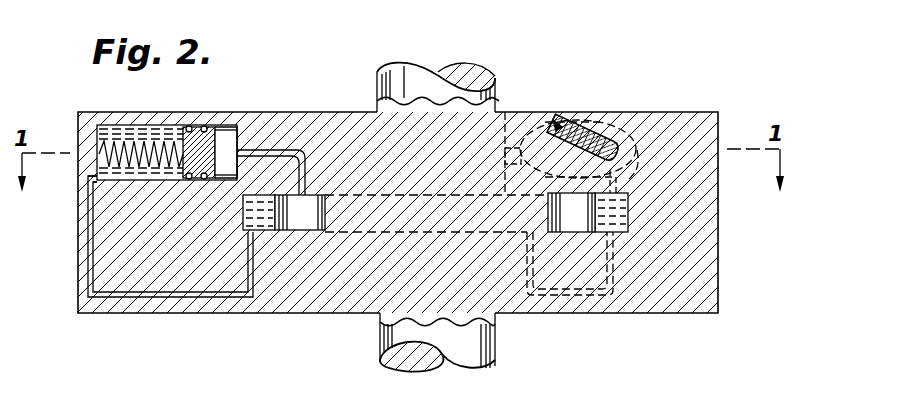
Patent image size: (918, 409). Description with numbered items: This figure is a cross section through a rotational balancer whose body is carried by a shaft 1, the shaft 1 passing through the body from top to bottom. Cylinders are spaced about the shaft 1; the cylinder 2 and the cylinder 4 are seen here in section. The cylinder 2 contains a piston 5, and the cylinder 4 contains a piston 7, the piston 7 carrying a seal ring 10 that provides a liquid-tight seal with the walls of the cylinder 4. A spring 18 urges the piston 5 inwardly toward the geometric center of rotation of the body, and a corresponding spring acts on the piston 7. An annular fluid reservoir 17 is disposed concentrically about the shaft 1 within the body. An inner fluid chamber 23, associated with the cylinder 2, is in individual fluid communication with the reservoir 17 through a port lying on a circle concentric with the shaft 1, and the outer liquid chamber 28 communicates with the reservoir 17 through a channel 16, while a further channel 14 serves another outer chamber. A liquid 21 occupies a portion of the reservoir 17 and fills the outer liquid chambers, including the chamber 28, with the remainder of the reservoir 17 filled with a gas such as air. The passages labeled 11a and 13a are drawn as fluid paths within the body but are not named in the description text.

The shaft 1 is at (414, 74).
The cylinder 2 is at (590, 130).
The cylinder 4 is at (146, 125).
The piston 5 is at (563, 124).
The piston 7 is at (222, 136).
The seal ring 10 is at (198, 126).
The bore 11a is at (505, 114).
The passage 13a is at (300, 150).
The channel 14 is at (637, 150).
The channel 16 is at (166, 298).
The annular fluid reservoir 17 is at (307, 232).
The spring 18 is at (612, 172).
The liquid 21 is at (262, 230).
The inner fluid chamber 23 is at (552, 126).
The outer liquid chamber 28 is at (108, 178).